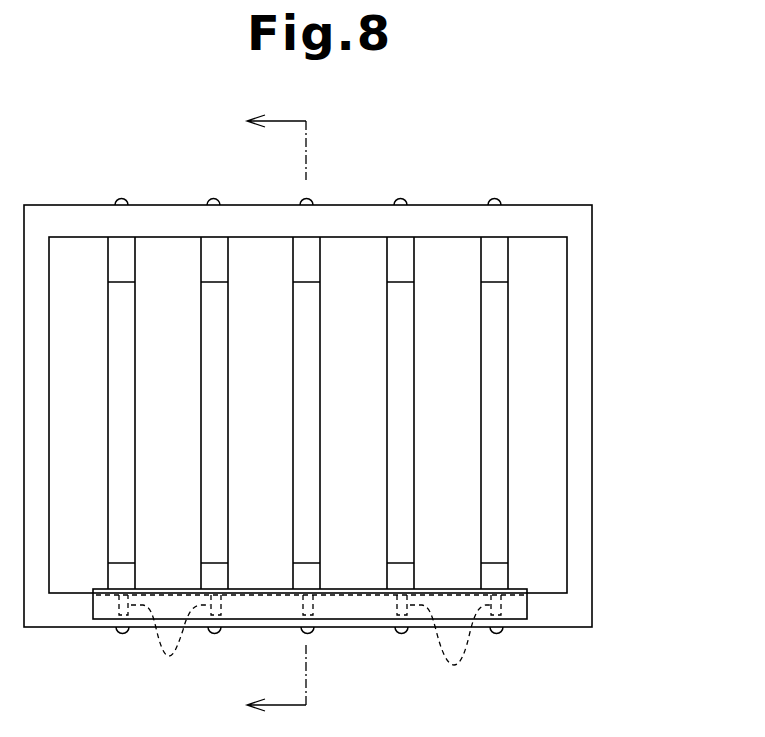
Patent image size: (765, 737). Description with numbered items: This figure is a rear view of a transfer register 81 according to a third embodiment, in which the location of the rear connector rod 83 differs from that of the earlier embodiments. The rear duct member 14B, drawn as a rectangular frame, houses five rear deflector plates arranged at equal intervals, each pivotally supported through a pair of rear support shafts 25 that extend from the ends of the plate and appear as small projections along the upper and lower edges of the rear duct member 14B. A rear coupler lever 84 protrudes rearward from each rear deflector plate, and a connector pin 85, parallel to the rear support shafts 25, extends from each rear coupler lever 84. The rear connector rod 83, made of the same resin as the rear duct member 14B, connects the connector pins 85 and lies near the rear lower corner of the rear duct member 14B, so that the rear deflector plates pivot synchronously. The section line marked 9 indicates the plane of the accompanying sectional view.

The transfer register 81 is at (627, 262).
The rear duct member 14B is at (580, 391).
The rear support shafts 25 is at (118, 193).
The rear coupler lever 84 is at (130, 575).
The rear connector rod 83 is at (363, 610).
The connector pin 85 is at (311, 654).
The section line 9- 9 is at (264, 416).